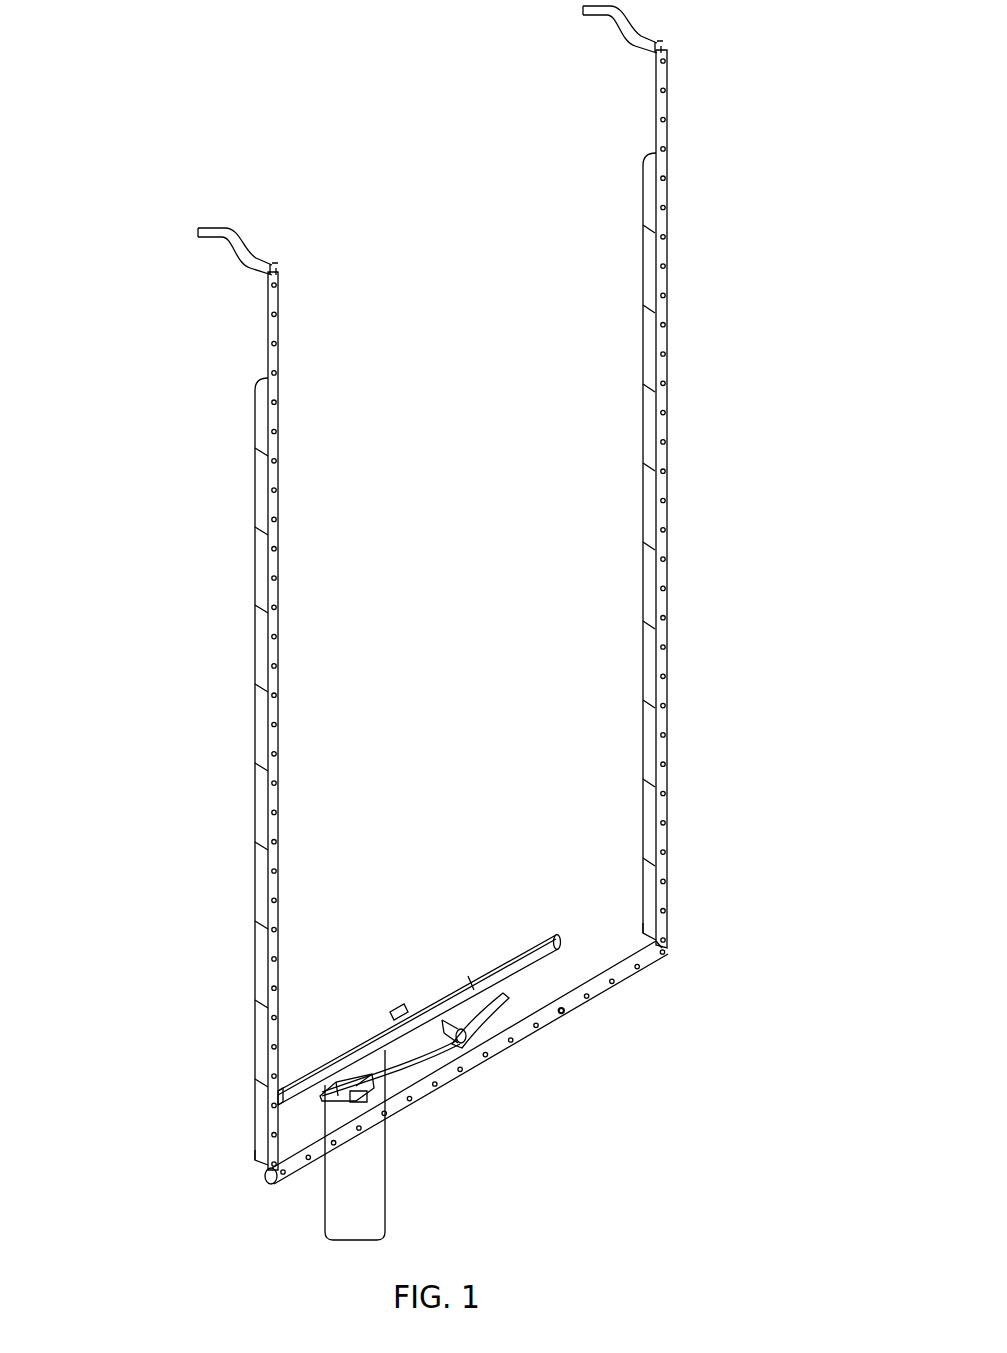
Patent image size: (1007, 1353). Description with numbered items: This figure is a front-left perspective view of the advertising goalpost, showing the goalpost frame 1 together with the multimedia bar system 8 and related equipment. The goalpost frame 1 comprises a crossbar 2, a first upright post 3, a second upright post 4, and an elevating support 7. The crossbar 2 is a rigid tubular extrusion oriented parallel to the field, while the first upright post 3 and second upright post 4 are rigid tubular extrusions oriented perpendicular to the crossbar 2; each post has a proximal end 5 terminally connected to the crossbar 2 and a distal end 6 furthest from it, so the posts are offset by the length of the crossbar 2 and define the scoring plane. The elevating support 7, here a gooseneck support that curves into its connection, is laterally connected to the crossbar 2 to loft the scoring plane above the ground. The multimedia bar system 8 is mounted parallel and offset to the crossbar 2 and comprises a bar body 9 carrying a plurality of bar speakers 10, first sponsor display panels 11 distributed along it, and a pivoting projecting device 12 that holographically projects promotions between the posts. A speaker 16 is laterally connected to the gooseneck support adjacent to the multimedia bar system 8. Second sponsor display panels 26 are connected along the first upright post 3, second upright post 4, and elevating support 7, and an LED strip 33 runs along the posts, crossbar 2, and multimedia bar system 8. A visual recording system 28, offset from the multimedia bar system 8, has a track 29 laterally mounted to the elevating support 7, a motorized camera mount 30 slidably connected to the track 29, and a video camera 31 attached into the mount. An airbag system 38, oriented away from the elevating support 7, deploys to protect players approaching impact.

The goalpost frame 1 is at (180, 222).
The crossbar 2 is at (639, 968).
The first upright post 3 is at (276, 648).
The second upright post 4 is at (666, 540).
The proximal end 5 is at (242, 1173).
The distal end 6 is at (288, 341).
The elevating support 7 is at (461, 1046).
The multimedia bar system 8 is at (582, 888).
The bar body 9 is at (520, 970).
The bar speakers 10 is at (463, 982).
The first sponsor display panels 11 is at (554, 936).
The pivoting projecting device 12 is at (397, 1016).
The speaker 16 is at (388, 1098).
The second sponsor display panels 26 is at (258, 493).
The visual recording system 28 is at (487, 1038).
The track 29 is at (556, 1018).
The motorized camera mount 30 is at (380, 1104).
The video camera 31 is at (318, 1162).
The LED strip 33 is at (276, 489).
The airbag system 38 is at (376, 1219).